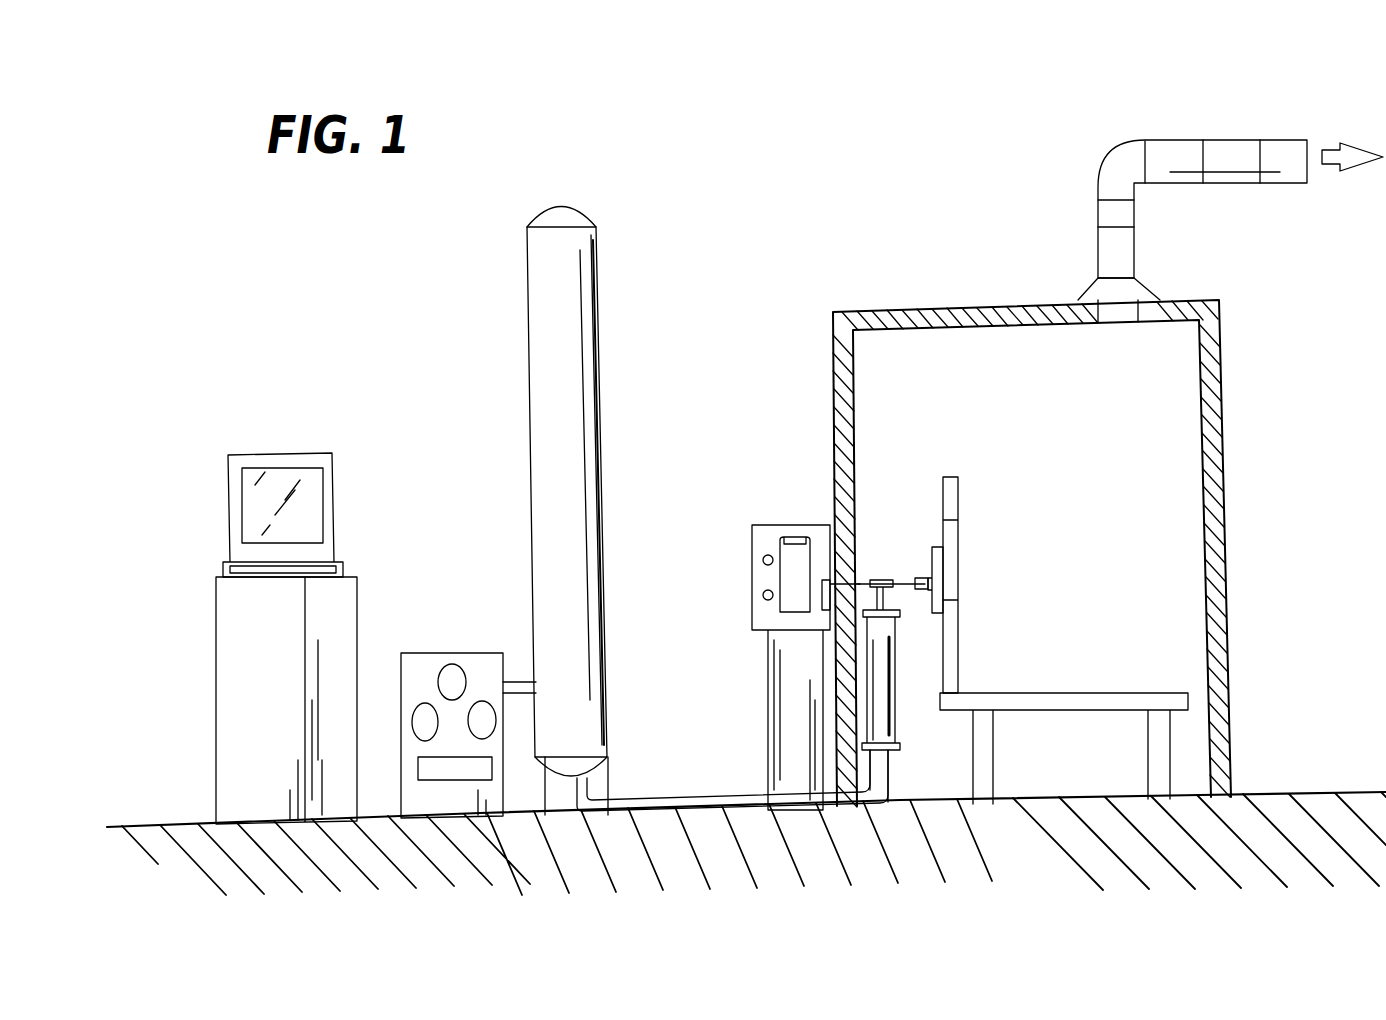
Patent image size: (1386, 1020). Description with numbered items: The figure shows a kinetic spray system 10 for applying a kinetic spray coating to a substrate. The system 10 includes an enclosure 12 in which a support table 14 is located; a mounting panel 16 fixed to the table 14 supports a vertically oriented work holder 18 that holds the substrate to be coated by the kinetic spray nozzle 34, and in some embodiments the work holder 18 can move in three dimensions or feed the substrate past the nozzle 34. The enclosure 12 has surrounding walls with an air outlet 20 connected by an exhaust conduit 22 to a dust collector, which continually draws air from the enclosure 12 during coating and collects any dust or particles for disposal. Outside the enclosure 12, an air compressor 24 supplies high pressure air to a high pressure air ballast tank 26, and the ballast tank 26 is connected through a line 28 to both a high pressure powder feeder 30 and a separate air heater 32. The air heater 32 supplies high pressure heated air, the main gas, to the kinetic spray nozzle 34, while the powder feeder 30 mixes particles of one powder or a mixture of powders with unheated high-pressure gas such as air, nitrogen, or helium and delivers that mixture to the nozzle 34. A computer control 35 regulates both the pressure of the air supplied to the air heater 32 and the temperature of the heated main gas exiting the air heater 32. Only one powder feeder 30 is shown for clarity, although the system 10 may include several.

The kinetic spray system 10 is at (322, 388).
The enclosure 12 is at (1226, 540).
The support table 14 is at (1128, 690).
The mounting panel 16 is at (962, 612).
The work holder 18 is at (928, 583).
The air outlet 20 is at (1120, 322).
The exhaust conduit 22 is at (1235, 160).
The air compressor 24 is at (430, 665).
The high pressure air ballast tank 26 is at (570, 308).
The line 28 is at (700, 798).
The high pressure powder feeder 30 is at (752, 585).
The air heater 32 is at (900, 718).
The kinetic spray nozzle 34 is at (920, 583).
The computer control 35 is at (232, 640).